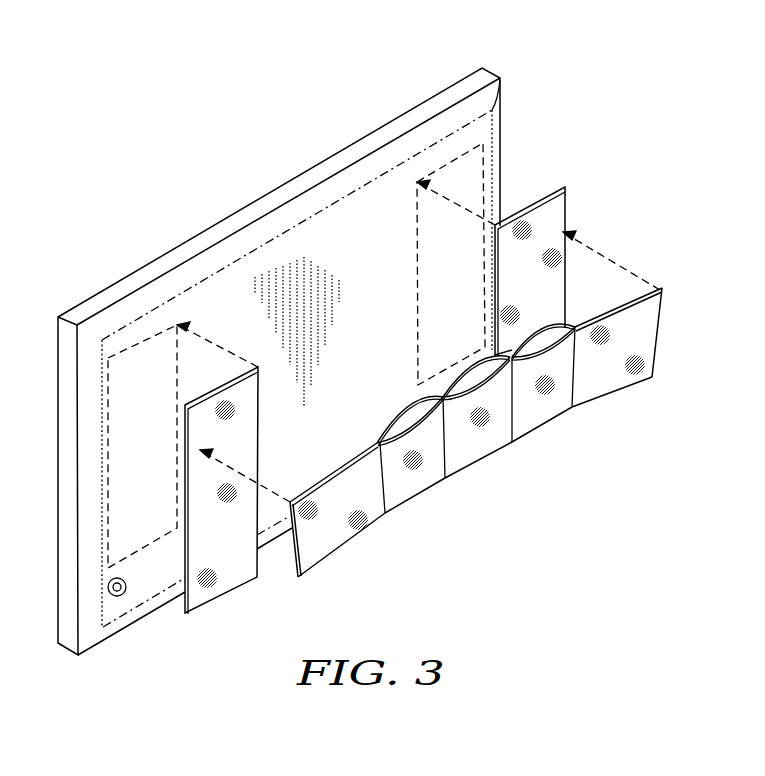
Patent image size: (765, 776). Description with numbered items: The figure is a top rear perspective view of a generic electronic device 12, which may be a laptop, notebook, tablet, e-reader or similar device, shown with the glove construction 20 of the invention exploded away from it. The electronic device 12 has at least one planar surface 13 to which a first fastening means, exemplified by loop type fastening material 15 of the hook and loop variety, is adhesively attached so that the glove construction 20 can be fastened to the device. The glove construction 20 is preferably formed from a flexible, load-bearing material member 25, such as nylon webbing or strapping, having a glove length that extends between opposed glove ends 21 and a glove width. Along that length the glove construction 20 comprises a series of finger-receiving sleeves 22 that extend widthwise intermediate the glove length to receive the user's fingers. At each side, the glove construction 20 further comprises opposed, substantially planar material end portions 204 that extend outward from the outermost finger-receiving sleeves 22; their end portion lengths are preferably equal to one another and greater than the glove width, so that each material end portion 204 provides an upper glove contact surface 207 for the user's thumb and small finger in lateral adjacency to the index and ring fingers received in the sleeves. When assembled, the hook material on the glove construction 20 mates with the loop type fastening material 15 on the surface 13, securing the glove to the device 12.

The electronic device 12 is at (482, 66).
The planar surface 13 is at (355, 217).
The loop type fastening material 15 is at (227, 575).
The glove construction 20 is at (647, 267).
The glove ends 21 is at (290, 560).
The finger-receiving sleeves 22 is at (420, 490).
The flexible, load-bearing material member 25 is at (378, 517).
The material end portions 204 is at (325, 547).
The upper glove contact surface 207 is at (347, 482).